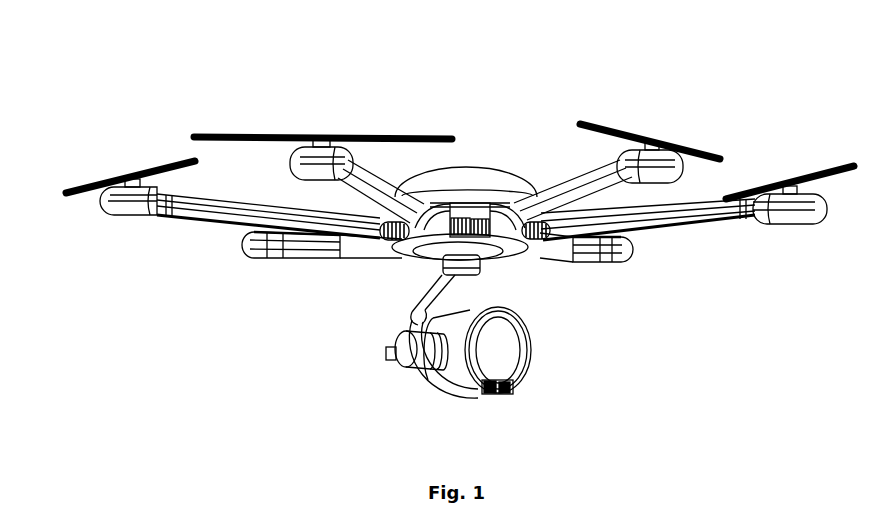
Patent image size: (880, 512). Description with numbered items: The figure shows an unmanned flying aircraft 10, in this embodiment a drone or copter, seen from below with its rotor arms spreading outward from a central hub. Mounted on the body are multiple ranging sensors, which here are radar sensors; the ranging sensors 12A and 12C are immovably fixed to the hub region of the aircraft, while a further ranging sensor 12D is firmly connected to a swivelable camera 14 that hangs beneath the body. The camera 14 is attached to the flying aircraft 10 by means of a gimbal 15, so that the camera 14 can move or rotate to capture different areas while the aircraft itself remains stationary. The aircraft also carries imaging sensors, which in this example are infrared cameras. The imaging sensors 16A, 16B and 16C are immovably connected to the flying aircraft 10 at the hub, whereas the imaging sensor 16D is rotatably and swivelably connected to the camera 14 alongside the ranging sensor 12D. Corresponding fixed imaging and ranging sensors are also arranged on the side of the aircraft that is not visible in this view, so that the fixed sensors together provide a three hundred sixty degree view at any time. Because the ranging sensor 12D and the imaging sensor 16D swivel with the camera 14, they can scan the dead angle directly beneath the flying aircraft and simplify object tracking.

The unmanned flying aircraft 10 is at (730, 50).
The ranging sensor 12A is at (375, 248).
The ranging sensor 12C is at (535, 252).
The ranging sensor 12D is at (486, 398).
The swivelable camera 14 is at (453, 370).
The gimbal 15 is at (410, 322).
The imaging sensor 16A is at (392, 240).
The imaging sensor 16B is at (478, 226).
The imaging sensor 16C is at (552, 248).
The imaging sensor 16D is at (514, 395).